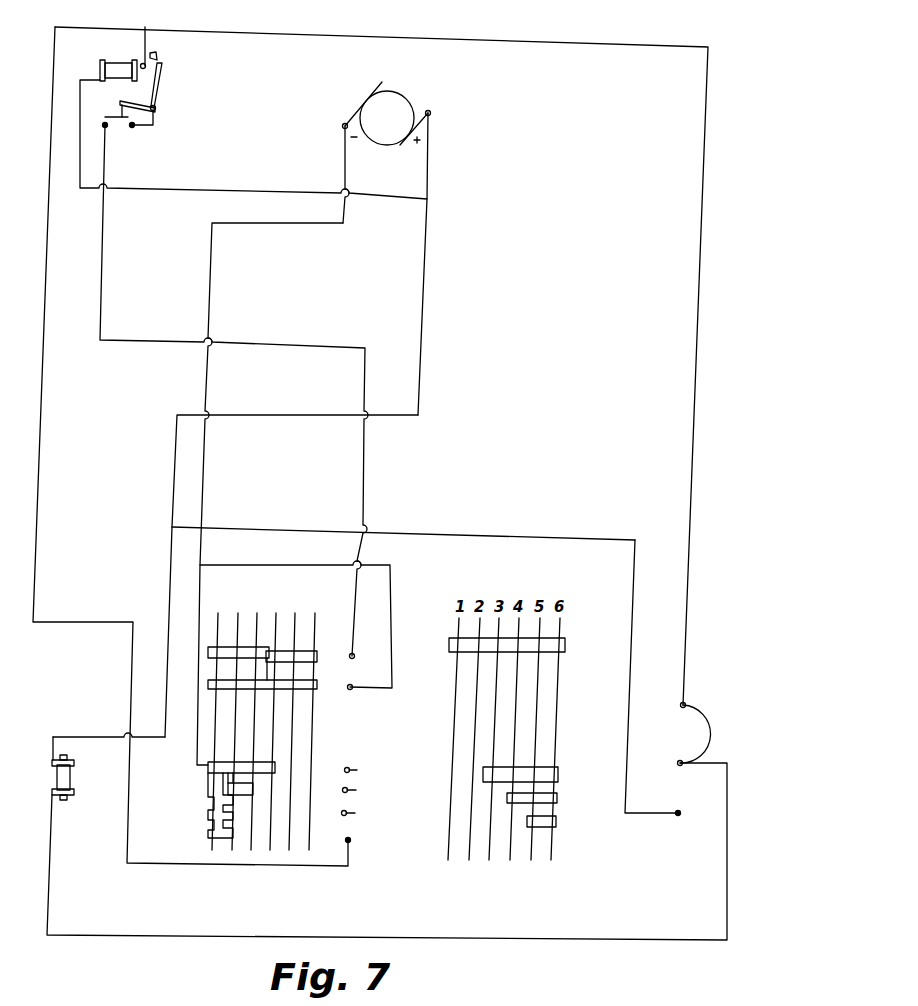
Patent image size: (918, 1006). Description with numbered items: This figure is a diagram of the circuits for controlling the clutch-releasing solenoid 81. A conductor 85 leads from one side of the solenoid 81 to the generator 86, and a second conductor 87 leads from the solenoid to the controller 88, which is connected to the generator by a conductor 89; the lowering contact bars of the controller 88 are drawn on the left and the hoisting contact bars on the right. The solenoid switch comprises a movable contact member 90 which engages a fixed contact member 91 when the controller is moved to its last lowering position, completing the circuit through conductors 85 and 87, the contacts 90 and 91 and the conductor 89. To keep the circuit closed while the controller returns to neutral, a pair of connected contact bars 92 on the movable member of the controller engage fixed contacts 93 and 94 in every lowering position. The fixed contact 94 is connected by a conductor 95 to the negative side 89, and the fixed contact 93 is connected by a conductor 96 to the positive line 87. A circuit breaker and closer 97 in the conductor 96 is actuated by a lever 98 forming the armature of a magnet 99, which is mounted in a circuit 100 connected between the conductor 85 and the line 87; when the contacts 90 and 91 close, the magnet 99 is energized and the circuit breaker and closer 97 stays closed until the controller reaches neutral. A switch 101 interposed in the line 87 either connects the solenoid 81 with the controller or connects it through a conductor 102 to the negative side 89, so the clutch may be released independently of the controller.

The solenoid 81 is at (70, 790).
The conductor 85 is at (172, 527).
The generator 86 is at (398, 107).
The conductor 87 is at (40, 455).
The controller 88 is at (267, 647).
The conductor 89 is at (208, 394).
The contact member 90 is at (207, 834).
The fixed contact member 91 is at (350, 838).
The contact bars 92 is at (210, 652).
The fixed contact 93 is at (354, 657).
The fixed contact 94 is at (351, 689).
The conductor 95 is at (392, 612).
The conductor 96 is at (364, 382).
The circuit breaker and closer 97 is at (120, 122).
The lever 98 is at (162, 98).
The magnet 99 is at (123, 52).
The circuit 100 is at (230, 185).
The switch 101 is at (710, 727).
The conductor 102 is at (632, 579).